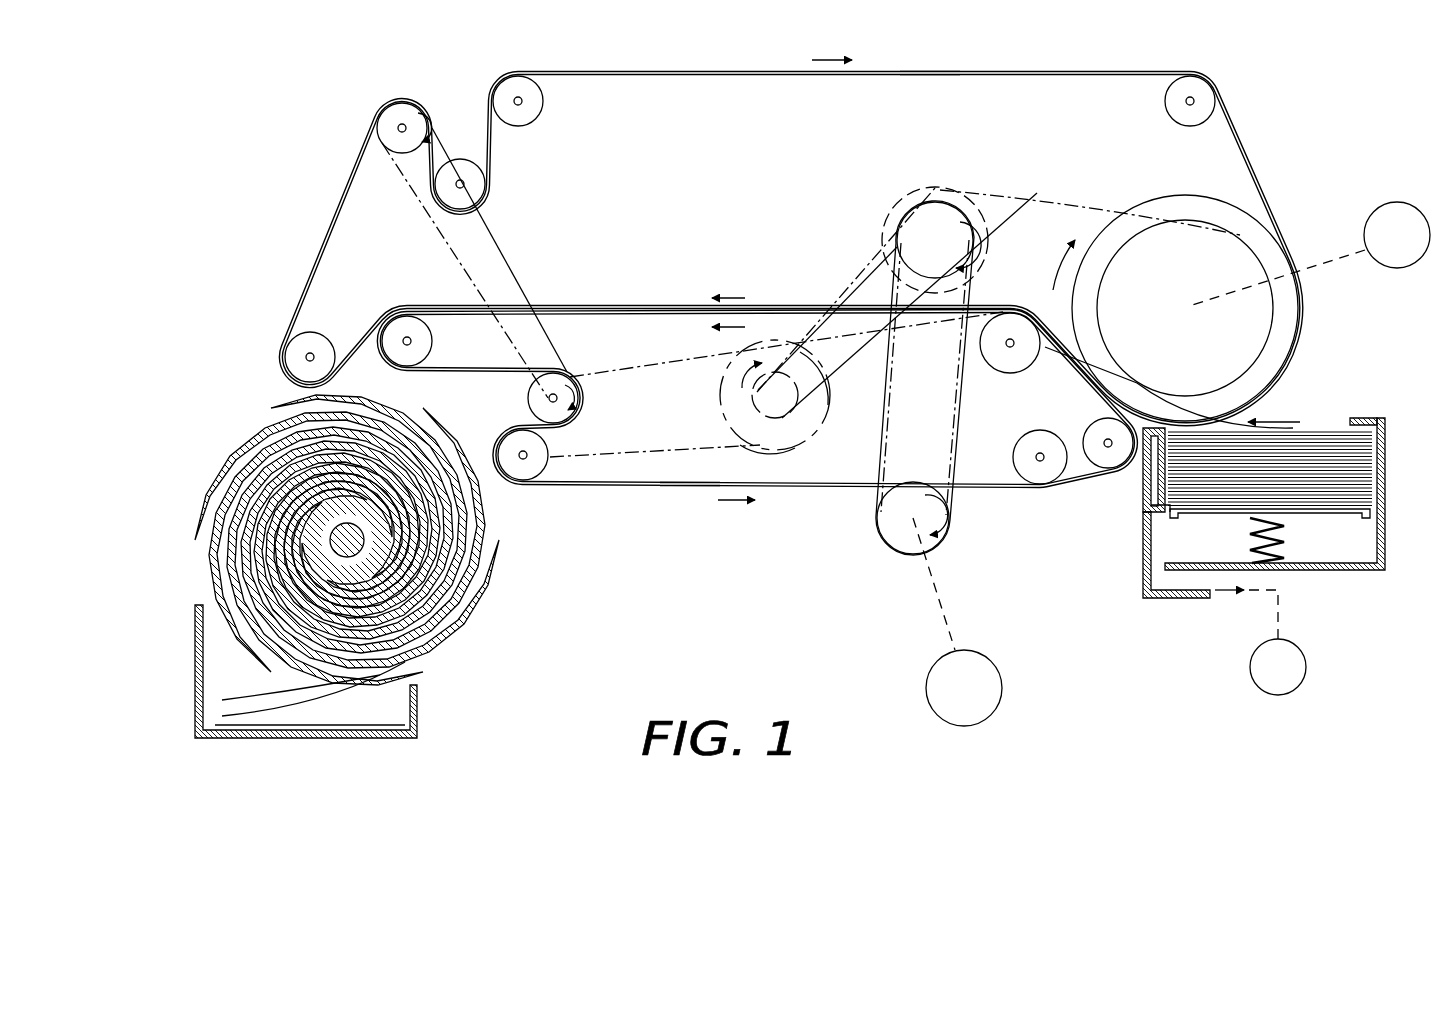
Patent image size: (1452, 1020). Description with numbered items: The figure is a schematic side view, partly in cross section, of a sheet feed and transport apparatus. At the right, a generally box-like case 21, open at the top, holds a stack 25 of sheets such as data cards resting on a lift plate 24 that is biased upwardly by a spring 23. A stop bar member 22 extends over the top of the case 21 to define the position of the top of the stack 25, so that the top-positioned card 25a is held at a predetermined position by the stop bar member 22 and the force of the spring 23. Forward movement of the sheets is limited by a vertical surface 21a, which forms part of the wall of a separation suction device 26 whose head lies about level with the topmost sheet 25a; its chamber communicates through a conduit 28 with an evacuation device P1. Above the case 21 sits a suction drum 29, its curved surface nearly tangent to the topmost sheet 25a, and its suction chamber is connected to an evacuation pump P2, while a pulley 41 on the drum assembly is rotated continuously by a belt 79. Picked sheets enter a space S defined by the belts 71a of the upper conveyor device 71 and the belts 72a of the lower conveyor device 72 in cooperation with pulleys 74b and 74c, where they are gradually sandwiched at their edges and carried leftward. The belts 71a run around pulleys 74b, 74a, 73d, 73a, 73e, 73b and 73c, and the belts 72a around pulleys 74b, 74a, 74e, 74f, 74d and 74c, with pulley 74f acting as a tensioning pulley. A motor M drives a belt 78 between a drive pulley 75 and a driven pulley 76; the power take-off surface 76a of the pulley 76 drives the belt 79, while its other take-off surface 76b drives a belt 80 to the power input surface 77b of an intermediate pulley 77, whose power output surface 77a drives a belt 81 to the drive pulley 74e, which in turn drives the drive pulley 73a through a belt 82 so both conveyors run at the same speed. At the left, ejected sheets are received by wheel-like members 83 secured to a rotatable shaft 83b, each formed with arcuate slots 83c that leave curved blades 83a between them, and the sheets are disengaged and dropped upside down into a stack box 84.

The case 21 is at (1385, 545).
The vertical surface 21a is at (1150, 506).
The stop bar member 22 is at (1378, 416).
The spring 23 is at (1286, 536).
The lift plate 24 is at (1355, 518).
The stack 25 is at (1385, 456).
The top-positioned card 25a is at (1300, 427).
The separation suction device 26 is at (1143, 488).
The conduit 28 is at (1143, 586).
The suction drum 29 is at (1298, 308).
The pulley 41 is at (1272, 338).
The upper conveyor device 71 is at (722, 171).
The belts of upper conveyor device 71a is at (928, 72).
The lower conveyor device 72 is at (730, 604).
The belts of lower conveyor device 72a is at (690, 488).
The drive pulley 73a is at (390, 125).
The pulley 73b is at (543, 101).
The pulley 73c is at (1166, 101).
The pulley 73d is at (318, 345).
The pulley 73e is at (460, 160).
The pulley 74a is at (425, 343).
The pulley 74b is at (1008, 370).
The pulley 74c is at (1090, 428).
The pulley 74d is at (1025, 440).
The drive pulley 74e is at (528, 398).
The tensioning pulley 74f is at (550, 456).
The drive pulley 75 is at (880, 525).
The driven pulley 76 is at (905, 186).
The power take-off surface 76a is at (882, 247).
The power take-off surface 76b is at (940, 189).
The intermediate pulley 77 is at (720, 385).
The power output surface 77a is at (805, 437).
The power input surface 77b is at (790, 447).
The belt 78 is at (888, 410).
The belt 79 is at (1106, 212).
The belt 80 is at (848, 286).
The belt 81 is at (640, 370).
The belt 82 is at (522, 292).
The wheel-like members 83 is at (372, 531).
The curved blades 83a is at (270, 398).
The rotatable shaft 83b is at (348, 524).
The arcuate slots 83c is at (225, 460).
The stack box 84 is at (418, 725).
The space S is at (1084, 367).
The motor M is at (964, 688).
The evacuation device P1 is at (1260, 642).
The evacuation pump P2 is at (1397, 235).